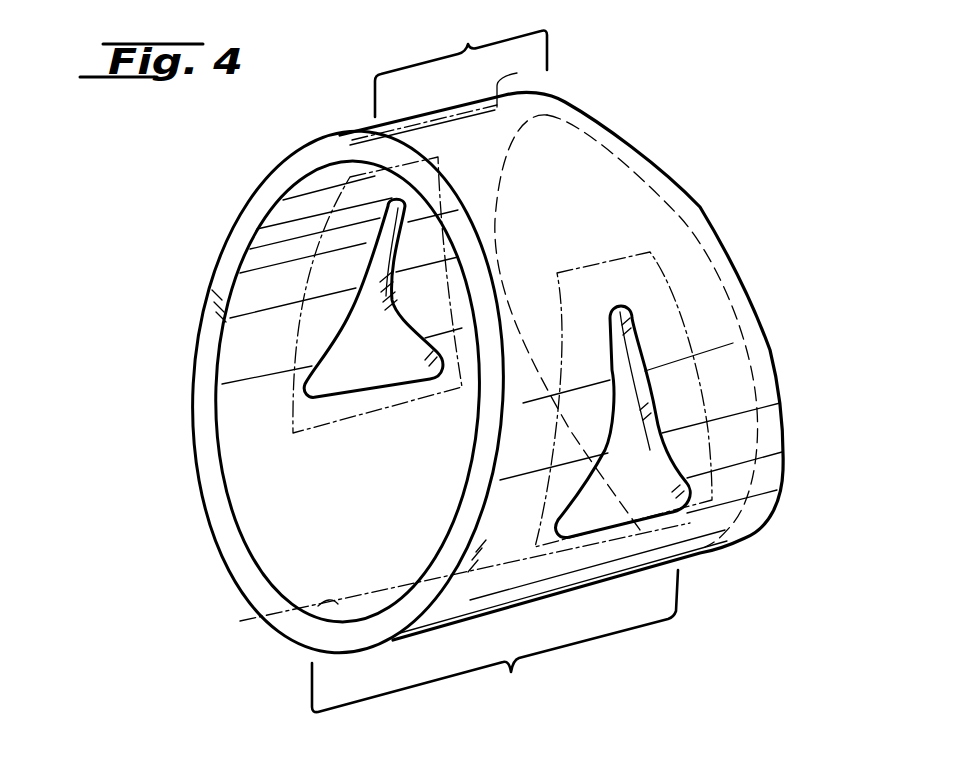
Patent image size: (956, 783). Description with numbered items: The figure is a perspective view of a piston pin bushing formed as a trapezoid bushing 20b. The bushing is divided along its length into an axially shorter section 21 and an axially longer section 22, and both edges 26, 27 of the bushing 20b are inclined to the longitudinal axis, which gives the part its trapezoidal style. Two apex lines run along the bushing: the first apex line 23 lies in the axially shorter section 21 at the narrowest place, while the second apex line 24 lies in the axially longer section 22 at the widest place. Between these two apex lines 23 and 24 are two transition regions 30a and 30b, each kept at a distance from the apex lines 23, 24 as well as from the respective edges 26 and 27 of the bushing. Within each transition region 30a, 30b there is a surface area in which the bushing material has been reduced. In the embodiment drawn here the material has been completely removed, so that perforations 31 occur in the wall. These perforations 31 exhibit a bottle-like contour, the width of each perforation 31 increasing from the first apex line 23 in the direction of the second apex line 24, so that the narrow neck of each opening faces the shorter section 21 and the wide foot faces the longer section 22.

The trapezoid bushing 20b is at (688, 150).
The axially shorter section 21 is at (461, 63).
The axially longer section 22 is at (495, 641).
The first apex line 23 is at (517, 73).
The second apex line 24 is at (447, 576).
The edge of piston pin bushing 26 is at (206, 353).
The edge of piston pin bushing 27 is at (728, 243).
The transition region 30a is at (322, 286).
The transition region 30b is at (690, 382).
The perforation 31 is at (332, 380).